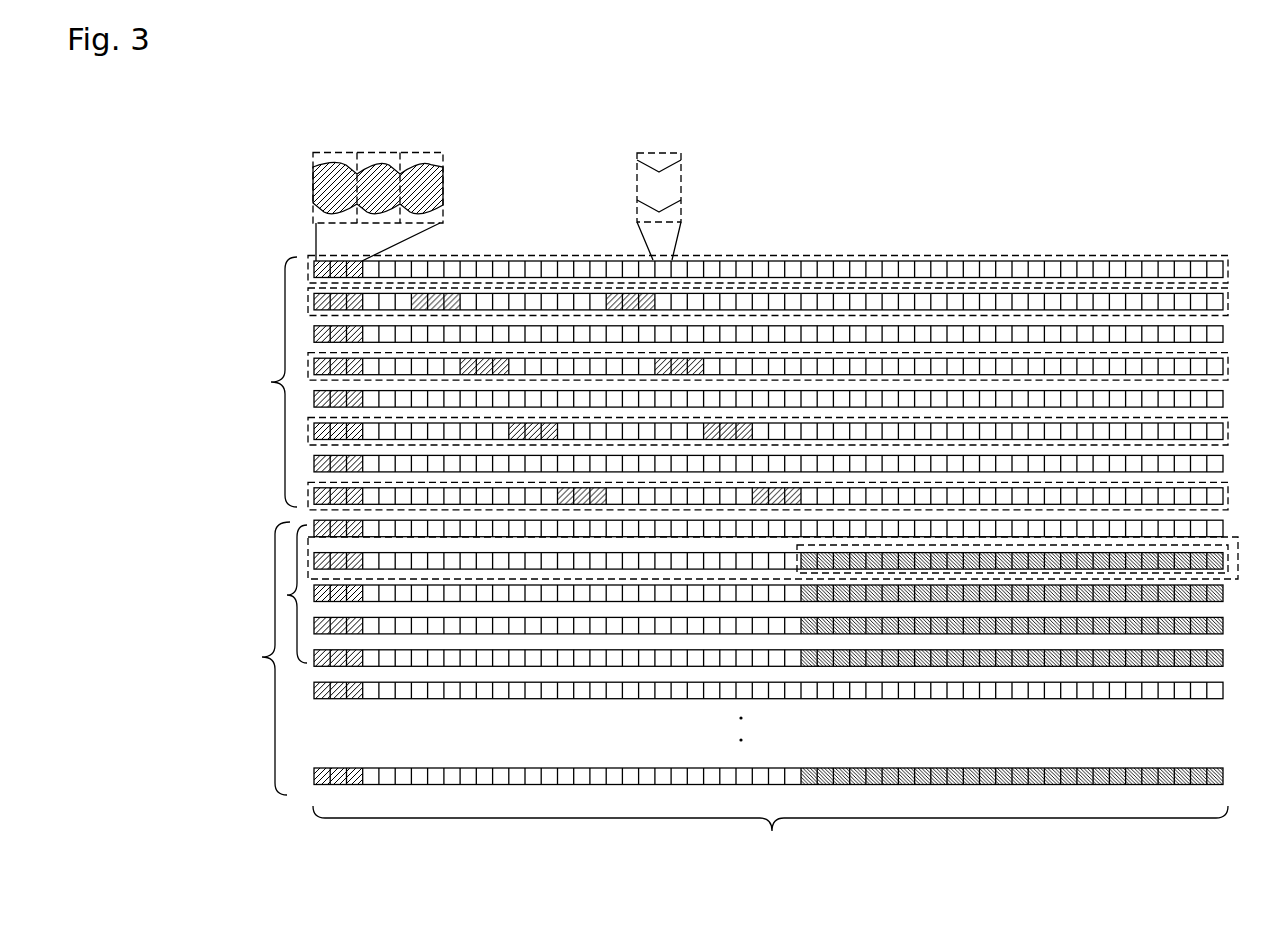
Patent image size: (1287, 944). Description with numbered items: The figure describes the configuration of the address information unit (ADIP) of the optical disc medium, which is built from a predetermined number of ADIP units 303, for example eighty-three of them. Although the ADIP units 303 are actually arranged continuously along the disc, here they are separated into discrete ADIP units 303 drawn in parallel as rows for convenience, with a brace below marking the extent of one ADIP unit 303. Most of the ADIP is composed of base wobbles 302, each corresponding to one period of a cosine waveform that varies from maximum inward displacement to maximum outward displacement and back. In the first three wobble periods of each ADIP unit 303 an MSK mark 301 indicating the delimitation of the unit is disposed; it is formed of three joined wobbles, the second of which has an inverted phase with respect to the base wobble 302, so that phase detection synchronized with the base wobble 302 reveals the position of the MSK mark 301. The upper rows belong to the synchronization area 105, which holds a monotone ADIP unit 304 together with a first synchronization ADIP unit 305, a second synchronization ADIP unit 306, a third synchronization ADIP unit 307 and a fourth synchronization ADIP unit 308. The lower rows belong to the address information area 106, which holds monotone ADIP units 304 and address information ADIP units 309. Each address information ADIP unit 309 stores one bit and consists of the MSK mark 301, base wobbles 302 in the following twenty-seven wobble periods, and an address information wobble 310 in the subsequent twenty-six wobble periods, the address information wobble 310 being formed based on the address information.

The MSK mark 301 is at (433, 153).
The base wobble 302 is at (680, 153).
The ADIP unit 303 is at (770, 836).
The monotone ADIP unit 304 is at (1228, 255).
The first synchronization ADIP unit 305 is at (1228, 286).
The second synchronization ADIP unit 306 is at (1223, 350).
The third synchronization ADIP unit 307 is at (1225, 413).
The fourth synchronization ADIP unit 308 is at (1228, 482).
The address information ADIP unit 309 is at (1238, 537).
The address information wobble 310 is at (1238, 579).
The synchronization area 105 is at (192, 382).
The address information area 106 is at (210, 658).